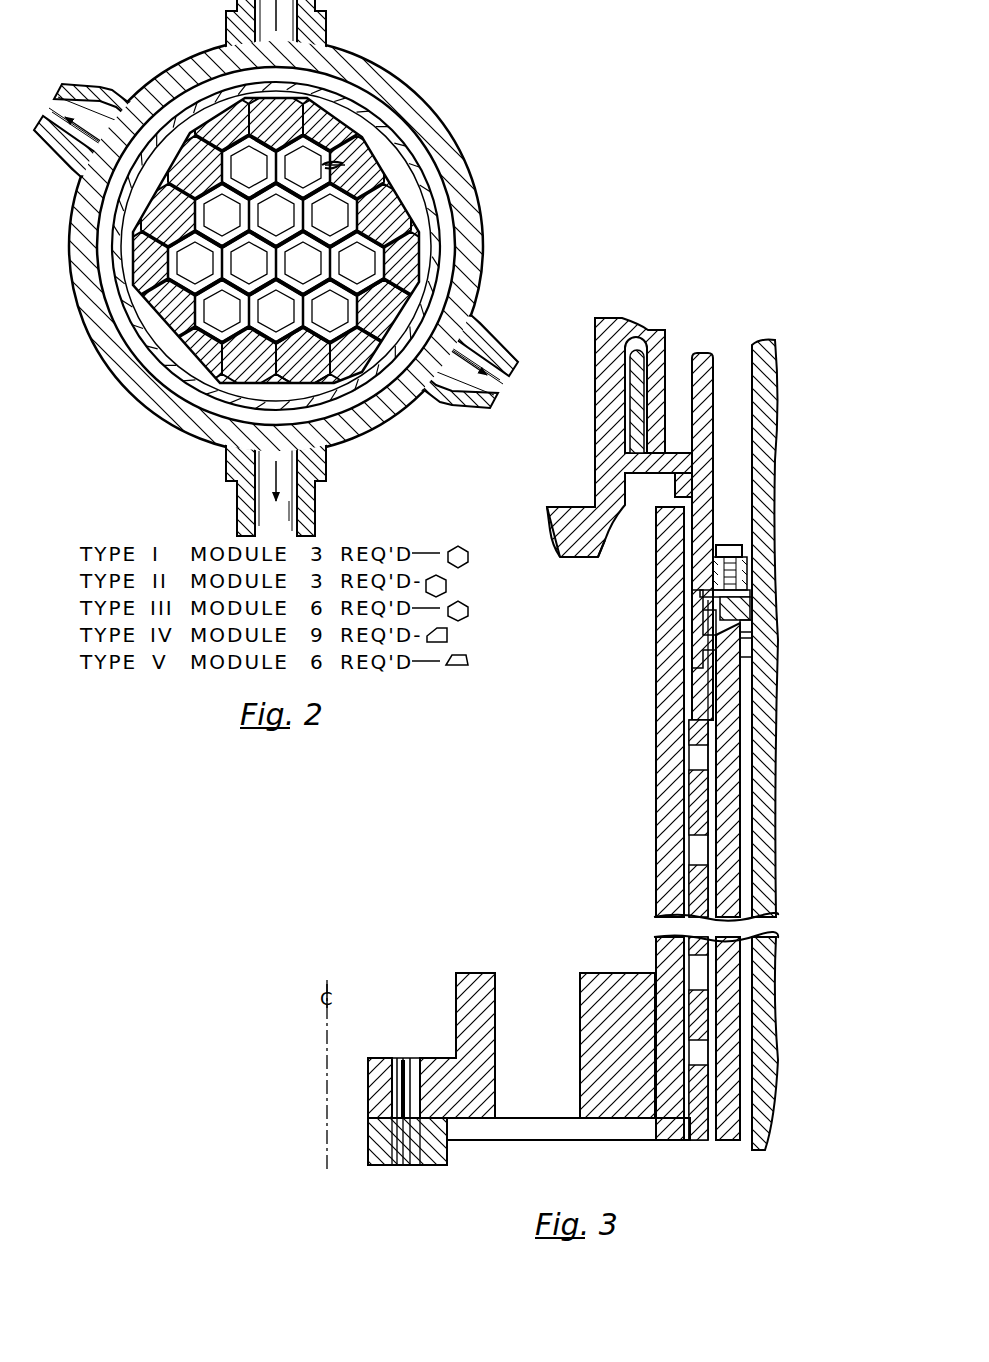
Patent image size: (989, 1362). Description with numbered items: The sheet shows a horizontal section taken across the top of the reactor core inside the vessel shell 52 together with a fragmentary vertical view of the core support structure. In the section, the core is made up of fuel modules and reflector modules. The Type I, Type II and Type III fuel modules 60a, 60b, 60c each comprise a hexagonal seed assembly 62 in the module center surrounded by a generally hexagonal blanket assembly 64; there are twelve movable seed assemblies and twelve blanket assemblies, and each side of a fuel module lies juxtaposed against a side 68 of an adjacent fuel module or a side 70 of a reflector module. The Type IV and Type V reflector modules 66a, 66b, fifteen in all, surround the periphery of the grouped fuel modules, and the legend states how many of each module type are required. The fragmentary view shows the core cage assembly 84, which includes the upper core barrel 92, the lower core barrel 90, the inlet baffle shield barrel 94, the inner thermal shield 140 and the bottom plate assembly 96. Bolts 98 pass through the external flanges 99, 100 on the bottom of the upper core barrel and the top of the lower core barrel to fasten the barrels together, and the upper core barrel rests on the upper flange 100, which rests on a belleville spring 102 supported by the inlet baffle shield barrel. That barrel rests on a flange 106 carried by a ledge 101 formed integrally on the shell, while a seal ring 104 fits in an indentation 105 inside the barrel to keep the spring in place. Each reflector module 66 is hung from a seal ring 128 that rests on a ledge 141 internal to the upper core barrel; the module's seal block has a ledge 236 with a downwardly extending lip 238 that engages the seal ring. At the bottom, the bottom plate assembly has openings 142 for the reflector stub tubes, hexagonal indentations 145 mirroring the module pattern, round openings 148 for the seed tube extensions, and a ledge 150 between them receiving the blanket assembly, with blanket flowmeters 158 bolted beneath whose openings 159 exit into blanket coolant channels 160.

In FIG. 2, the vessel shell 52 is at (136, 386).
In FIG. 3, the vessel shell 52 is at (782, 705).
In FIG. 2, the seed assembly 62 is at (136, 292).
In FIG. 2, the Type I fuel module 60a is at (268, 212).
In FIG. 2, the Type II fuel module 60b is at (333, 217).
In FIG. 2, the Type III fuel module 60c is at (360, 264).
In FIG. 2, the blanket assembly 64 is at (280, 340).
In FIG. 3, the reflector module 66 is at (552, 500).
In FIG. 2, the Type IV reflector module 66a is at (395, 300).
In FIG. 2, the Type V reflector module 66b is at (314, 282).
In FIG. 2, the side of adjacent fuel module 68 is at (332, 186).
In FIG. 2, the side of reflector module 70 is at (312, 195).
In FIG. 3, the core cage assembly 84 is at (716, 783).
In FIG. 3, the lower core barrel 90 is at (700, 895).
In FIG. 3, the upper core barrel 92 is at (707, 385).
In FIG. 3, the inlet baffle shield barrel 94 is at (730, 822).
In FIG. 3, the bottom plate assembly 96 is at (610, 968).
In FIG. 3, the bolts 98 is at (734, 545).
In FIG. 3, the external flange of upper core barrel 99 is at (746, 564).
In FIG. 3, the upper flange of lower core barrel 100 is at (722, 592).
In FIG. 3, the ledge 101 is at (752, 647).
In FIG. 3, the belleville spring 102 is at (748, 607).
In FIG. 3, the seal ring 104 is at (705, 655).
In FIG. 3, the indentation 105 is at (712, 637).
In FIG. 3, the flange 106 is at (747, 627).
In FIG. 3, the seal ring 128 is at (636, 378).
In FIG. 3, the inner thermal shield 140 is at (670, 812).
In FIG. 3, the ledge 141 is at (675, 490).
In FIG. 3, the openings 142 is at (558, 1056).
In FIG. 3, the hexagonal indentations 145 is at (428, 1016).
In FIG. 3, the round openings 148 is at (371, 1092).
In FIG. 3, the ledge 150 is at (437, 1058).
In FIG. 3, the blanket flowmeter 158 is at (448, 1160).
In FIG. 3, the openings 159 is at (398, 1158).
In FIG. 3, the blanket coolant channels 160 is at (390, 1057).
In FIG. 3, the ledge 236 is at (612, 337).
In FIG. 3, the lip 238 is at (657, 343).